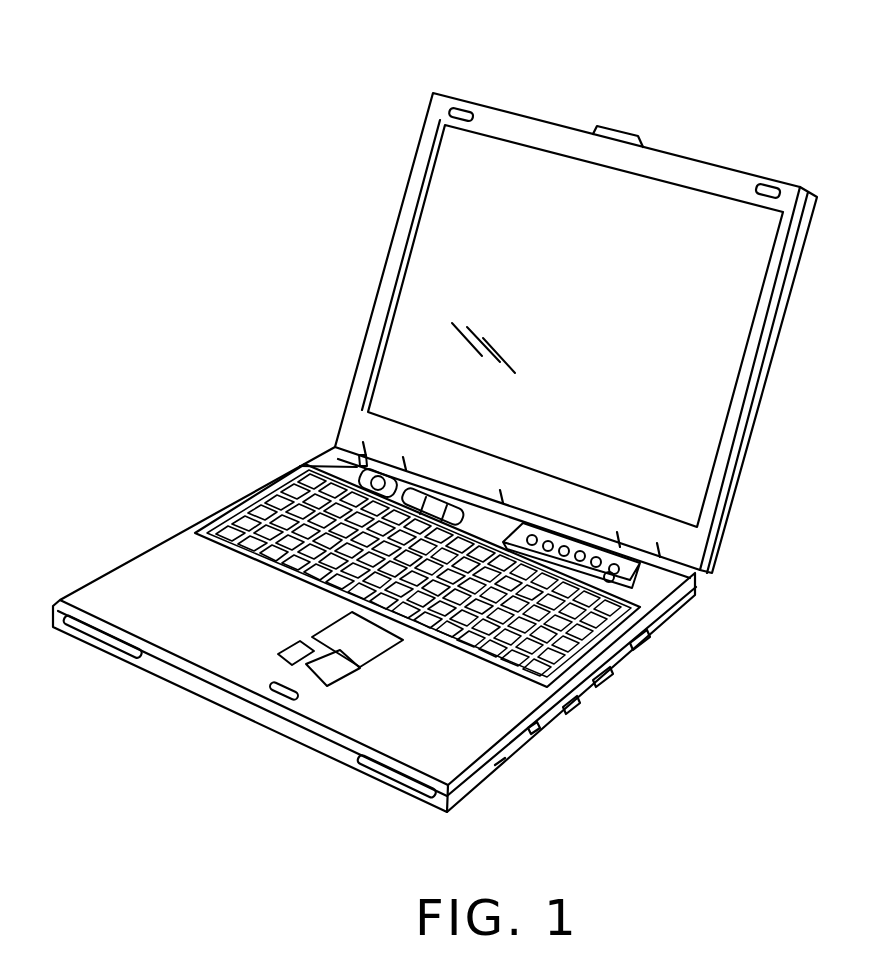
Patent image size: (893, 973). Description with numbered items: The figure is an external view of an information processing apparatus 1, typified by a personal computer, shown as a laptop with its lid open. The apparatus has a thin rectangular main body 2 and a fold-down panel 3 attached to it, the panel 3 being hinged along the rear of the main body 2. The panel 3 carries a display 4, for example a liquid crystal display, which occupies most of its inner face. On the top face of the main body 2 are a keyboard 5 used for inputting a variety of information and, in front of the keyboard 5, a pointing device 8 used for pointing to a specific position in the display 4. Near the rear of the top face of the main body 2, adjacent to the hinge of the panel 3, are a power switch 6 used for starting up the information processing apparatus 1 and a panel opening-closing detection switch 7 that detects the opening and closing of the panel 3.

The information processing apparatus 1 is at (331, 98).
The main body 2 is at (155, 542).
The fold-down panel 3 is at (553, 122).
The display 4 is at (445, 272).
The keyboard 5 is at (607, 637).
The power switch 6 is at (355, 472).
The panel opening-closing detection switch 7 is at (358, 453).
The pointing device 8 is at (330, 633).